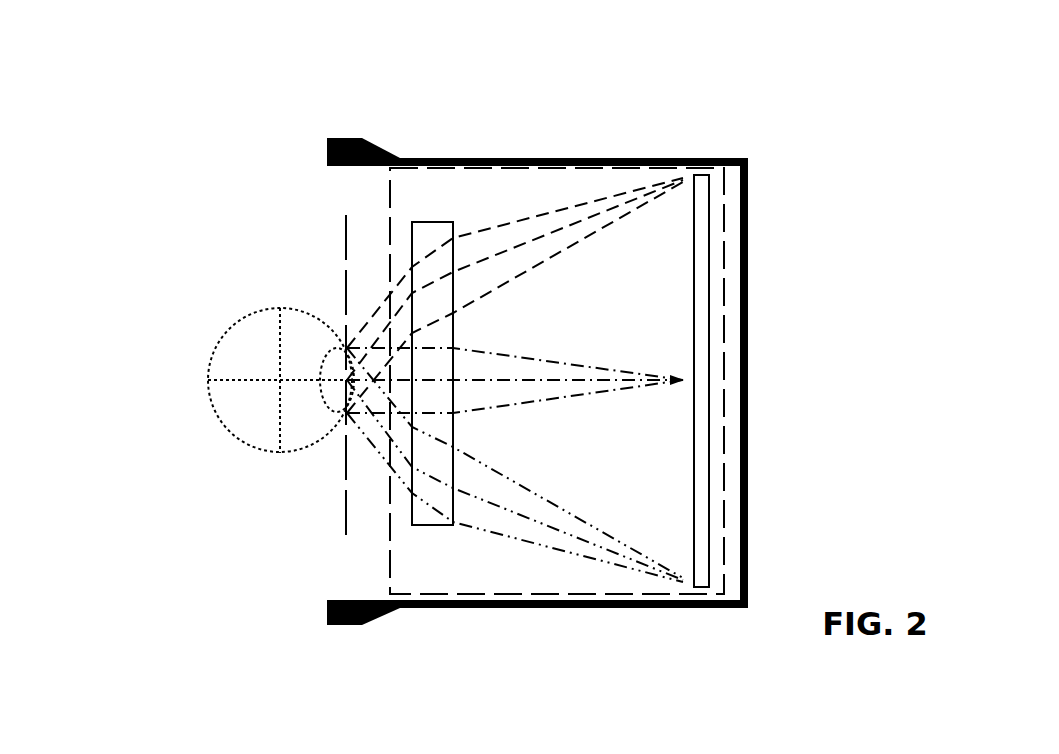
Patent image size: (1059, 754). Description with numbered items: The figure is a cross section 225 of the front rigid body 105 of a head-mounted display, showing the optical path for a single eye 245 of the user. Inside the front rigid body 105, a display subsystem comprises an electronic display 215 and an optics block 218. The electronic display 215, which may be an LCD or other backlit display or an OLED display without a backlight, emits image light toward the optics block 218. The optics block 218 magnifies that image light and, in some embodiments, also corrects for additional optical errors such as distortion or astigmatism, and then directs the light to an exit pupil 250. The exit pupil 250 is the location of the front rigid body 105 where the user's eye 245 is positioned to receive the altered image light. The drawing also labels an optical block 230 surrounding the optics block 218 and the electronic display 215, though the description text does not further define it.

The cross section 225 is at (97, 35).
The front rigid body 105 is at (715, 152).
The optics block 218 is at (411, 231).
The electronic display 215 is at (711, 292).
The eye 245 is at (239, 322).
The optical block 230 is at (387, 503).
The exit pupil 250 is at (339, 519).